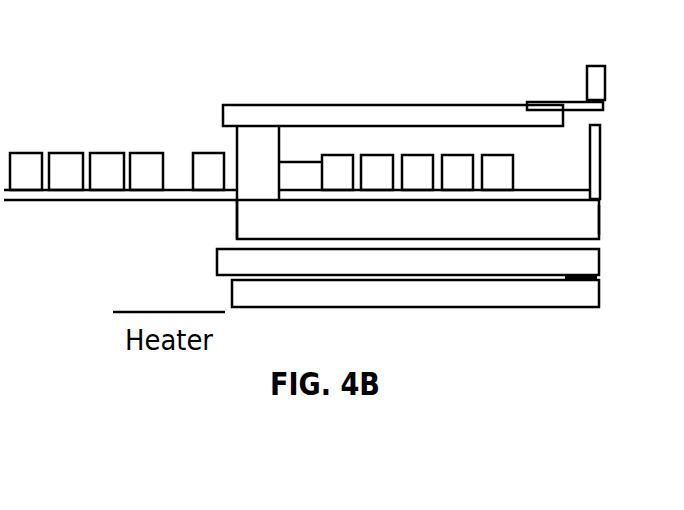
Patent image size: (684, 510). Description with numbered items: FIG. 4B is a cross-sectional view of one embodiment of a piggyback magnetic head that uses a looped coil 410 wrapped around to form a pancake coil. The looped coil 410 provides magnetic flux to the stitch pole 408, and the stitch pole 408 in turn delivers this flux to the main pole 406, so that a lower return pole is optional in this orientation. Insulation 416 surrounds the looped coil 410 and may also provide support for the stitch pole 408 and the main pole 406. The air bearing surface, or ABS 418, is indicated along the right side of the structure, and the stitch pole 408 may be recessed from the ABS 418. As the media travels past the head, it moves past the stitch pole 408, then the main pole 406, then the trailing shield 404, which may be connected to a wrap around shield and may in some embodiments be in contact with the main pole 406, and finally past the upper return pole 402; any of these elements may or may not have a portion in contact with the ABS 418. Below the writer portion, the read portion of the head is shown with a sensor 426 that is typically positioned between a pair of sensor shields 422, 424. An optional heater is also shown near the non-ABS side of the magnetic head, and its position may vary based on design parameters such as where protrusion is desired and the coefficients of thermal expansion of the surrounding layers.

The upper return pole 402 is at (606, 81).
The trailing shield 404 is at (602, 171).
The main pole 406 is at (565, 102).
The stitch pole 408 is at (420, 105).
The looped coil 410 is at (493, 155).
The insulation 416 is at (472, 231).
The ABS 418 is at (604, 219).
The sensor shield 422 is at (216, 262).
The sensor shield 424 is at (231, 288).
The sensor 426 is at (590, 274).